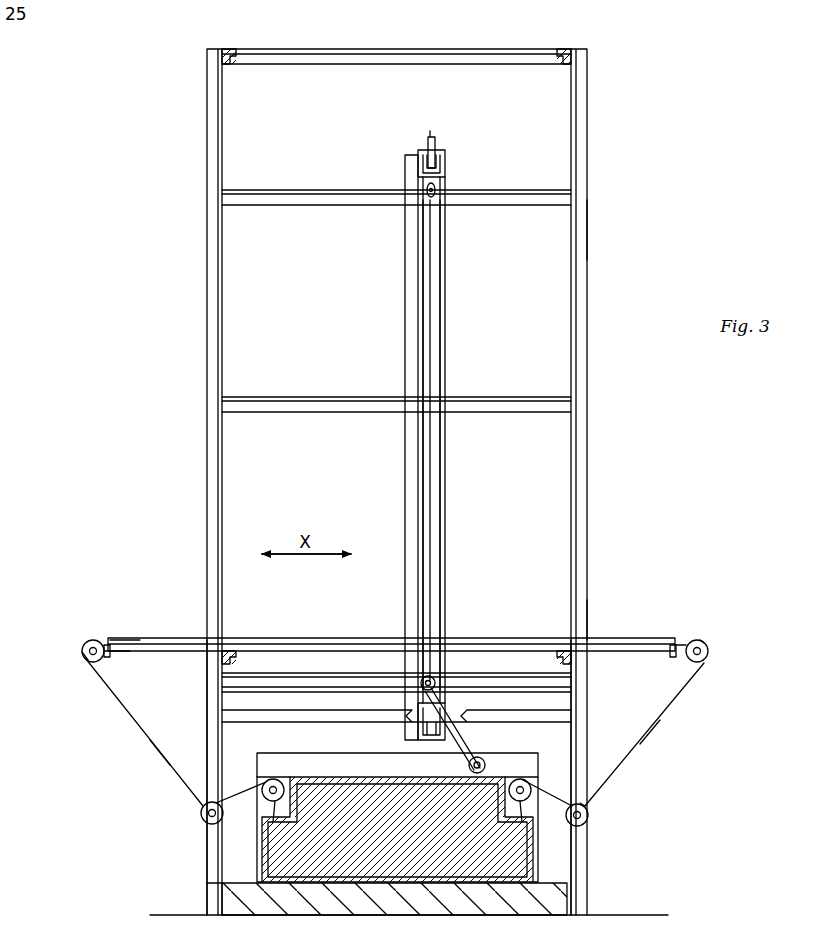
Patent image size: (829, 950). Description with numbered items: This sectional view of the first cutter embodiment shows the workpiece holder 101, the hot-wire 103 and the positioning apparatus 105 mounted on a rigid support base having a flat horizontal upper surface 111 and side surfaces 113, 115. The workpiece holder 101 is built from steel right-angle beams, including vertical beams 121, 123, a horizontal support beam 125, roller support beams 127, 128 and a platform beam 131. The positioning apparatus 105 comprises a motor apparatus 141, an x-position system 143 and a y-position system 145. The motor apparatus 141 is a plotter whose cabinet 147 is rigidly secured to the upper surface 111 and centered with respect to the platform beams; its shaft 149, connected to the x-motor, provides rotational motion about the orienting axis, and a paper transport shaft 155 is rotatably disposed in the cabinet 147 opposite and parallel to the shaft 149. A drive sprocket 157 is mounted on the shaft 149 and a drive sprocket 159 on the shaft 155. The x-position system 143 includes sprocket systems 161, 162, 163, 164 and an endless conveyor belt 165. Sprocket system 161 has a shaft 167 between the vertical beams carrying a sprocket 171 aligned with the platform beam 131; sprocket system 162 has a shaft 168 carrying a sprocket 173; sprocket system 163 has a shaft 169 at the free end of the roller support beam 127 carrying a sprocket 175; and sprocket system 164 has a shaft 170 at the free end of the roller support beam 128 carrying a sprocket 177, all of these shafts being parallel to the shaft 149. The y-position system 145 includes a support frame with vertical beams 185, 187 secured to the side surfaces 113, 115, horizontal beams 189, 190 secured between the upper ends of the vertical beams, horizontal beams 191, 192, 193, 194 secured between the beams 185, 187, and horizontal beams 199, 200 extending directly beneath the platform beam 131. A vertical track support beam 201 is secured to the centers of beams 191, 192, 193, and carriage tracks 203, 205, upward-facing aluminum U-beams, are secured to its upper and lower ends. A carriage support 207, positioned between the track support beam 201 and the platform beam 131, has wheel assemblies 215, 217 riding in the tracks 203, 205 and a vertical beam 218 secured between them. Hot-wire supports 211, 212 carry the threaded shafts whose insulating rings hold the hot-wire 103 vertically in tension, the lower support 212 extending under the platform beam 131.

The workpiece holder 101 is at (600, 620).
The hot-wire 103 is at (440, 305).
The positioning apparatus 105 is at (148, 782).
The upper surface 111 is at (552, 886).
The side surface 113 is at (210, 897).
The side surface 115 is at (590, 902).
The vertical beam 121 is at (206, 692).
The vertical beam 123 is at (588, 683).
The horizontal support beam 125 is at (228, 712).
The roller support beam 127 is at (107, 640).
The roller support beam 128 is at (672, 640).
The platform beam 131 is at (138, 638).
The motor apparatus 141 is at (378, 858).
The x-position system 143 is at (660, 732).
The y-position system 145 is at (595, 232).
The cabinet 147 is at (548, 848).
The shaft 149 is at (286, 793).
The paper transport shaft 155 is at (508, 792).
The drive sprocket 157 is at (278, 822).
The drive sprocket 159 is at (516, 822).
The sprocket system 161 is at (200, 825).
The sprocket system 162 is at (592, 825).
The sprocket system 163 is at (84, 644).
The sprocket system 164 is at (705, 640).
The endless conveyor belt 165 is at (698, 678).
The shaft 167 is at (203, 818).
The shaft 168 is at (590, 816).
The shaft 169 is at (84, 660).
The shaft 170 is at (710, 652).
The sprocket 171 is at (202, 764).
The sprocket 173 is at (583, 805).
The sprocket 175 is at (112, 655).
The sprocket 177 is at (720, 632).
The vertical beam 185 is at (228, 340).
The vertical beam 187 is at (590, 378).
The horizontal beam 189 is at (228, 48).
The horizontal beam 190 is at (568, 49).
The horizontal beam 191 is at (316, 212).
The horizontal beam 192 is at (306, 414).
The horizontal beam 193 is at (300, 668).
The horizontal beam 194 is at (321, 70).
The horizontal beam 199 is at (228, 650).
The horizontal beam 200 is at (560, 650).
The vertical track support beam 201 is at (416, 160).
The carriage track 203 is at (442, 165).
The carriage track 205 is at (416, 740).
The carriage support 207 is at (448, 262).
The hot-wire support 211 is at (437, 190).
The hot-wire support 212 is at (434, 676).
The wheel assembly 215 is at (437, 140).
The wheel assembly 217 is at (414, 710).
The vertical beam 218 is at (440, 349).